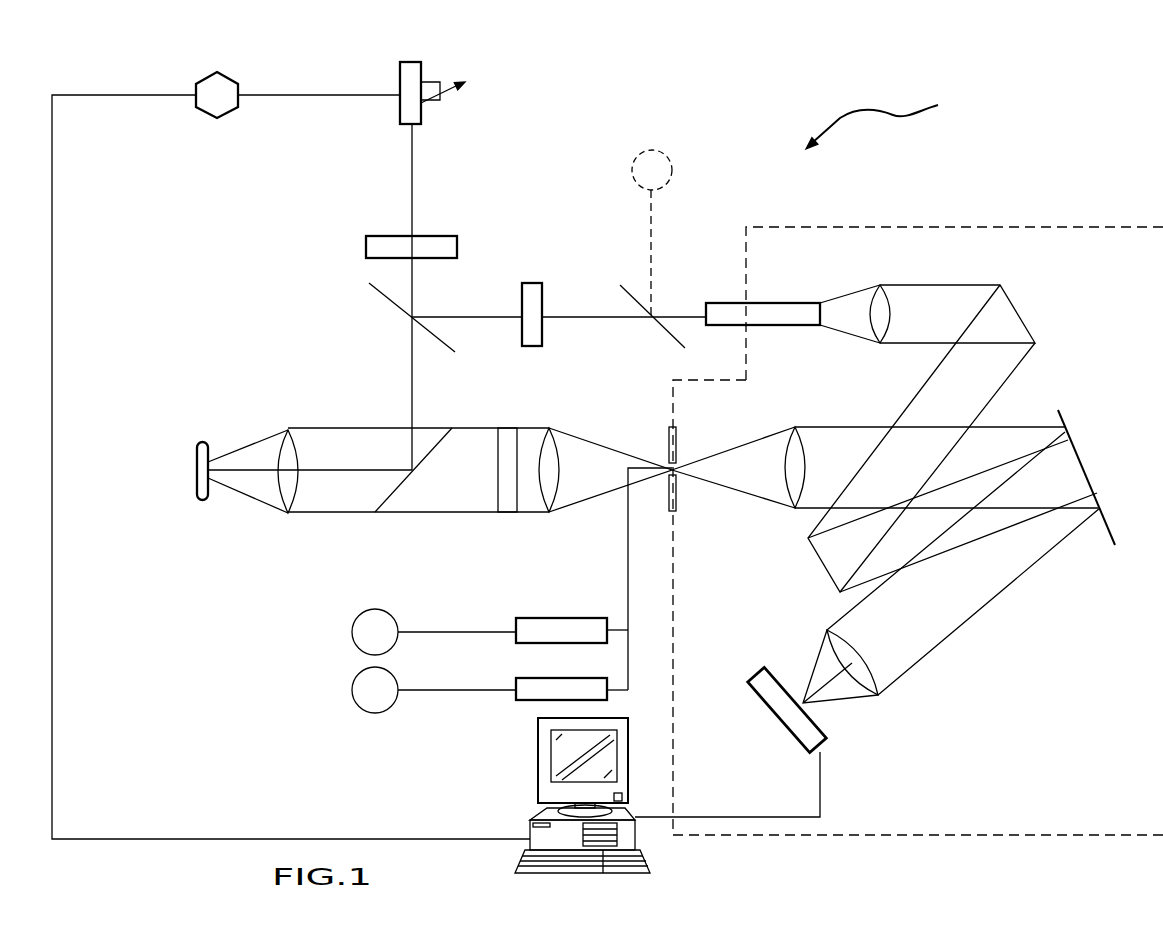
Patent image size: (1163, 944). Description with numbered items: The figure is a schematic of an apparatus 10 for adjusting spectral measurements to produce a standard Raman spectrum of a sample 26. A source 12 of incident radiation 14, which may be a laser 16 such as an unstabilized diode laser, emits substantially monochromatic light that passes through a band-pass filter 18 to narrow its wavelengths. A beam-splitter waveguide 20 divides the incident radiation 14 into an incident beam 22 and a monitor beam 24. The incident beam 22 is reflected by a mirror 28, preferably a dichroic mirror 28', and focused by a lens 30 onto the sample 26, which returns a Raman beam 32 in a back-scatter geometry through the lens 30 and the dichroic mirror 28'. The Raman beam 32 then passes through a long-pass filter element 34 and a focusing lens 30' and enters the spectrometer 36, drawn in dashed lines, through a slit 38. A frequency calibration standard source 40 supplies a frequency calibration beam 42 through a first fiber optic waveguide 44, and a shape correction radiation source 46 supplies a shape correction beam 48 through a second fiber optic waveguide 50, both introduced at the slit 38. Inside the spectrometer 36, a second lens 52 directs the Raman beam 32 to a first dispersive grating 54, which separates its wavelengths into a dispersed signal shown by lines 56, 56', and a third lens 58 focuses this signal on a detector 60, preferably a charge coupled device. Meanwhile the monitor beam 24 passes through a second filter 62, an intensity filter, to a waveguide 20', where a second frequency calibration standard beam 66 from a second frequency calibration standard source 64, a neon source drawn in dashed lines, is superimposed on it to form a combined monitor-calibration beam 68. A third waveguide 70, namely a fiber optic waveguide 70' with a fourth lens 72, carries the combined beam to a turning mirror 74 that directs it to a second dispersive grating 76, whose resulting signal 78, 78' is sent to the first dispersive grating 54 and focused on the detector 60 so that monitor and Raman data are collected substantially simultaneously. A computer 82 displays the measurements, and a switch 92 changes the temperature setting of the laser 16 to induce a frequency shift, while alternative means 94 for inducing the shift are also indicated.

The apparatus for adjusting spectral measurements 10 is at (887, 119).
The source 12 is at (421, 118).
The incident radiation 14 is at (412, 165).
The laser 16 is at (400, 110).
The filter 18 is at (366, 246).
The waveguide 20 is at (397, 317).
The waveguide 20' is at (644, 326).
The incident beam 22 is at (412, 396).
The monitor beam 24 is at (440, 316).
The sample 26 is at (197, 468).
The mirror 28 is at (422, 470).
The dichroic mirror 28' is at (412, 521).
The lens 30 is at (270, 443).
The lens 30' is at (605, 439).
The Raman beam 32 is at (245, 448).
The filter element 34 is at (512, 430).
The spectrometer 36 is at (978, 225).
The slit 38 is at (693, 437).
The frequency calibration standard source 40 is at (352, 640).
The frequency calibration beam 42 is at (452, 628).
The first fiber optic waveguide 44 is at (560, 618).
The shape correction radiation source 46 is at (352, 694).
The shape correction beam 48 is at (448, 698).
The second fiber optic waveguide 50 is at (512, 702).
The second lens 52 is at (797, 462).
The first dispersive grating 54 is at (1082, 467).
The dispersed signal 56 is at (821, 645).
The dispersed signal 56' is at (1000, 641).
The third lens 58 is at (866, 685).
The detector 60 is at (760, 690).
The second filter 62 is at (542, 298).
The second frequency calibration standard source 64 is at (668, 155).
The second frequency calibration standard beam 66 is at (651, 222).
The combined monitor-calibration beam 68 is at (676, 300).
The third waveguide 70 is at (781, 282).
The fiber optic waveguide 70' is at (827, 349).
The fourth lens 72 is at (880, 305).
The turning mirror 74 is at (1023, 318).
The second dispersive grating 76 is at (823, 571).
The resulting signal 78 is at (952, 489).
The resulting signal 78' is at (963, 563).
The computer 82 is at (525, 828).
The switch 92 is at (430, 80).
The alternative means 94 is at (237, 88).